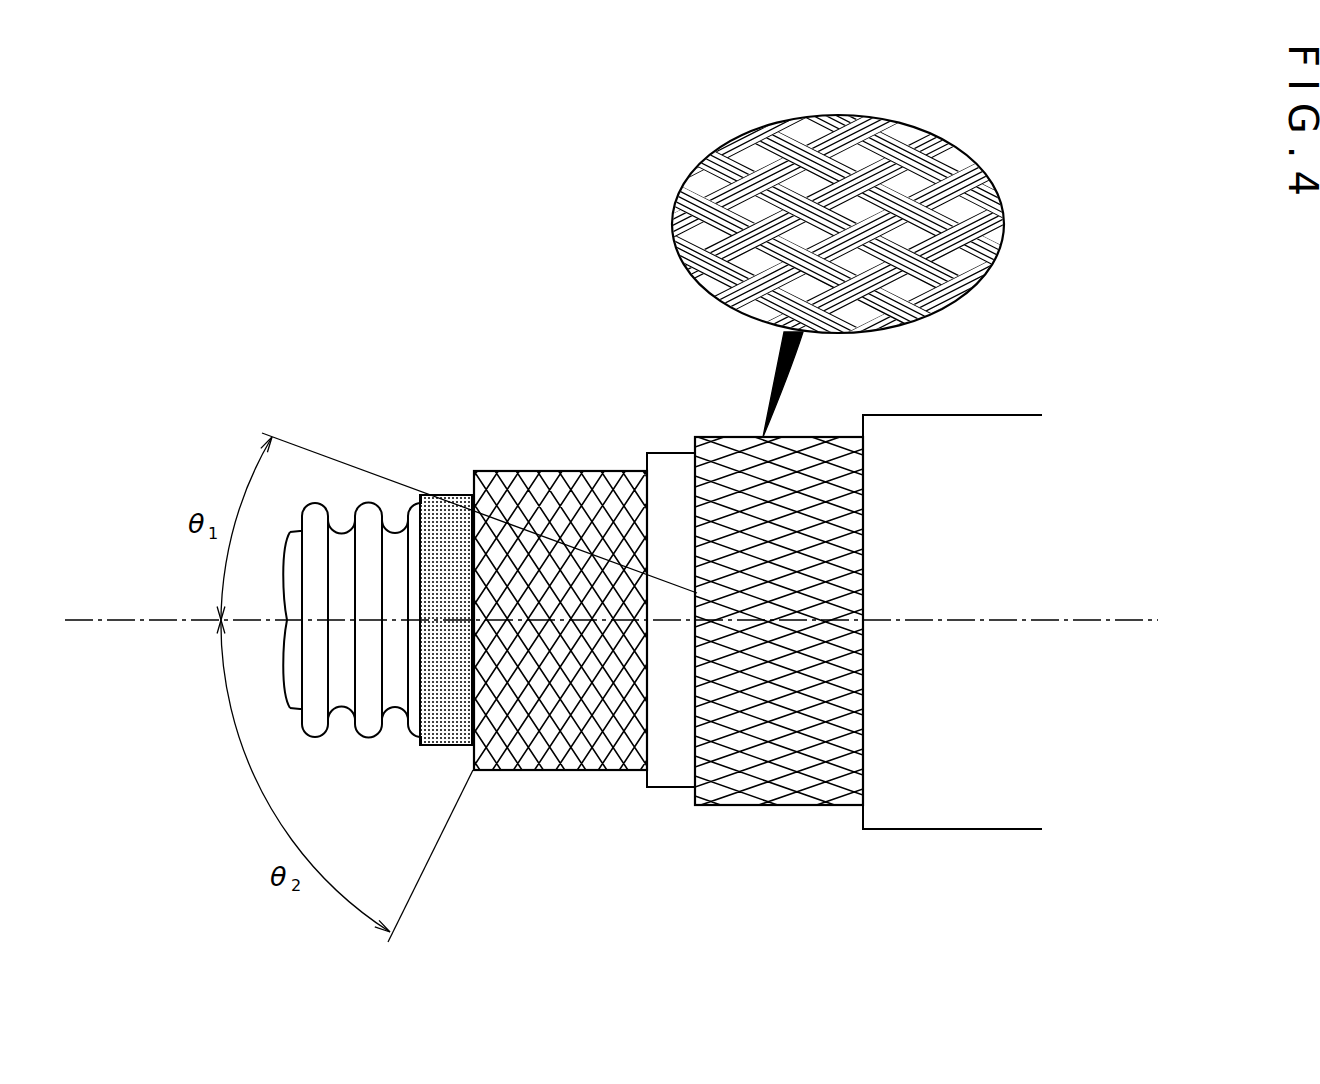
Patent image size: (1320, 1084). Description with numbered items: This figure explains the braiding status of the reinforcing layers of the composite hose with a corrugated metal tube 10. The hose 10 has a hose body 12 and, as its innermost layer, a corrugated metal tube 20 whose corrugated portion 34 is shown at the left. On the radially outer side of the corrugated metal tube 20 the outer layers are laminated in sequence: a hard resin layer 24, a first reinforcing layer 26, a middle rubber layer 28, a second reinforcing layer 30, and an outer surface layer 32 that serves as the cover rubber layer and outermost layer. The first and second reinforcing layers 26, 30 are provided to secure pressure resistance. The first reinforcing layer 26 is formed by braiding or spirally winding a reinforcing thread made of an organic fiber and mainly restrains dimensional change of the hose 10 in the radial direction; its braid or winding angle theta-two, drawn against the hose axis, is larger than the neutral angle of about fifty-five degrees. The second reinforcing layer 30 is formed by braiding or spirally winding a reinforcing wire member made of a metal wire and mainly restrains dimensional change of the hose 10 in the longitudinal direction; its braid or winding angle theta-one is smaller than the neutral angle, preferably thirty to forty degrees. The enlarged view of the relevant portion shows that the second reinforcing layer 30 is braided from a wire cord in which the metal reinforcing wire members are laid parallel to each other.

The composite hose with a corrugated metal tube 10 is at (755, 527).
The hose body 12 is at (1018, 410).
The corrugated metal tube 20 is at (294, 670).
The hard resin layer 24 is at (448, 506).
The first reinforcing layer 26 is at (566, 471).
The middle rubber layer 28 is at (668, 474).
The second reinforcing layer 30 is at (838, 450).
The outer surface layer 32 is at (931, 434).
The corrugated portion 34 is at (370, 745).